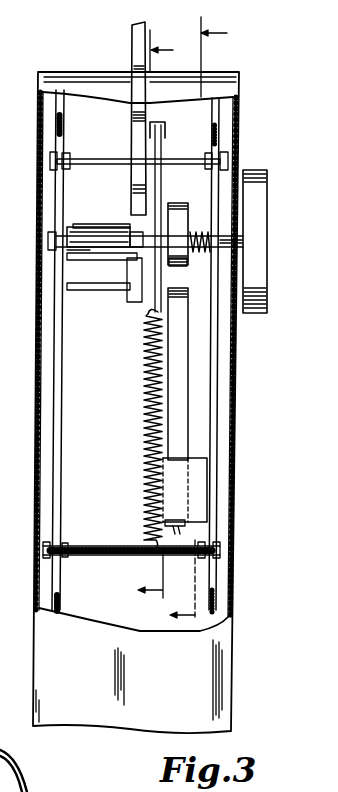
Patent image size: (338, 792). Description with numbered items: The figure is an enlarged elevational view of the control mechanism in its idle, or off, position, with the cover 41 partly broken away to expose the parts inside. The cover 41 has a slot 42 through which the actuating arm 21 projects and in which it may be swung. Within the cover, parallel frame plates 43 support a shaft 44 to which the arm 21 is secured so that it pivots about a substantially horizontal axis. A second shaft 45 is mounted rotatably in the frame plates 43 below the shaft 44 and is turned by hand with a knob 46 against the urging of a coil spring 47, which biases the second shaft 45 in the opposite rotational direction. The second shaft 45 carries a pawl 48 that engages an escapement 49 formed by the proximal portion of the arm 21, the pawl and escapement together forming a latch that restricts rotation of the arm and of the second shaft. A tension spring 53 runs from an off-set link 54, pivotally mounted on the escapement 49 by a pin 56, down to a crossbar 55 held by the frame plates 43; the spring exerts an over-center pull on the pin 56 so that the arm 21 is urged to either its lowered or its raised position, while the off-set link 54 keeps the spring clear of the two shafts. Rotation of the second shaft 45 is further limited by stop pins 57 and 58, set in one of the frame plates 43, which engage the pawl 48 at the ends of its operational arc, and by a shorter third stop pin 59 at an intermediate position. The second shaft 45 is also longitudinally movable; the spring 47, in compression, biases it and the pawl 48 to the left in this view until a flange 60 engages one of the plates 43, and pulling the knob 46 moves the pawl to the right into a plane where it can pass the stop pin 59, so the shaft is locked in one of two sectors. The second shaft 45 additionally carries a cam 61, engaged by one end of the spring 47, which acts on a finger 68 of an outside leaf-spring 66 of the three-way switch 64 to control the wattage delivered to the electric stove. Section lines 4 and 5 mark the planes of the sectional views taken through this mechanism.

The cover 41 is at (243, 133).
The slot 42 is at (128, 92).
The frame plates 43 is at (55, 400).
The actuating arm 21 is at (131, 40).
The section line 5- 5 is at (153, 315).
The section line 4- 4 is at (196, 321).
The shaft 44 is at (98, 158).
The pin 56 is at (163, 134).
The escapement 49 is at (131, 192).
The off-set link 54 is at (164, 192).
The cam 61 is at (180, 266).
The coil spring 47 is at (200, 250).
The flange 60 is at (76, 227).
The stop pin 58 is at (104, 226).
The third stop pin 59 is at (118, 260).
The second shaft 45 is at (90, 252).
The stop pin 57 is at (95, 291).
The pawl 48 is at (122, 297).
The knob 46 is at (268, 195).
The finger 68 is at (148, 318).
The tension spring 53 is at (143, 406).
The outside leaf-spring 66 is at (182, 420).
The three-way switch 64 is at (185, 477).
The crossbar 55 is at (112, 557).